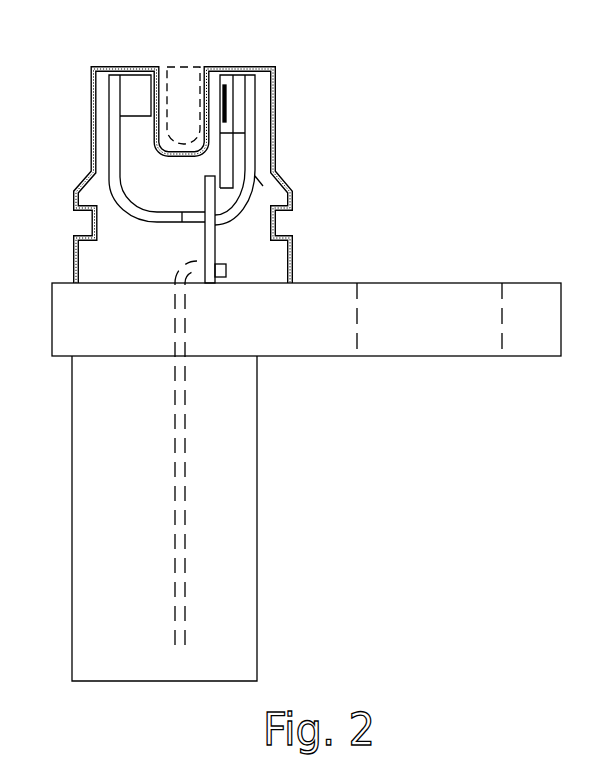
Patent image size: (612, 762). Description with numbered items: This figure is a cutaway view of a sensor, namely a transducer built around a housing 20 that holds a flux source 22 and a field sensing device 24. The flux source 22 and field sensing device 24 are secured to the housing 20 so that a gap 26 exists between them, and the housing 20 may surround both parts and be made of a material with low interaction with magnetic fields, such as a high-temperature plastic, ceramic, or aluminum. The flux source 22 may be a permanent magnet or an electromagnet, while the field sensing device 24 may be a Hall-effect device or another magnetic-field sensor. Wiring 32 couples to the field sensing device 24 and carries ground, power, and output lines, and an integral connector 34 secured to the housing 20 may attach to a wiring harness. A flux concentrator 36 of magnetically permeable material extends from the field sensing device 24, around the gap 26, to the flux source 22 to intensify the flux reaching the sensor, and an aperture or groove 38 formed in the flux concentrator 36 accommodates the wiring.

The housing 20 is at (276, 140).
The flux source 22 is at (135, 80).
The field sensing device 24 is at (240, 78).
The gap 26 is at (177, 67).
The wiring 32 is at (185, 478).
The integral connector 34 is at (72, 555).
The flux concentrator 36 is at (135, 208).
The aperture or groove 38 is at (282, 178).